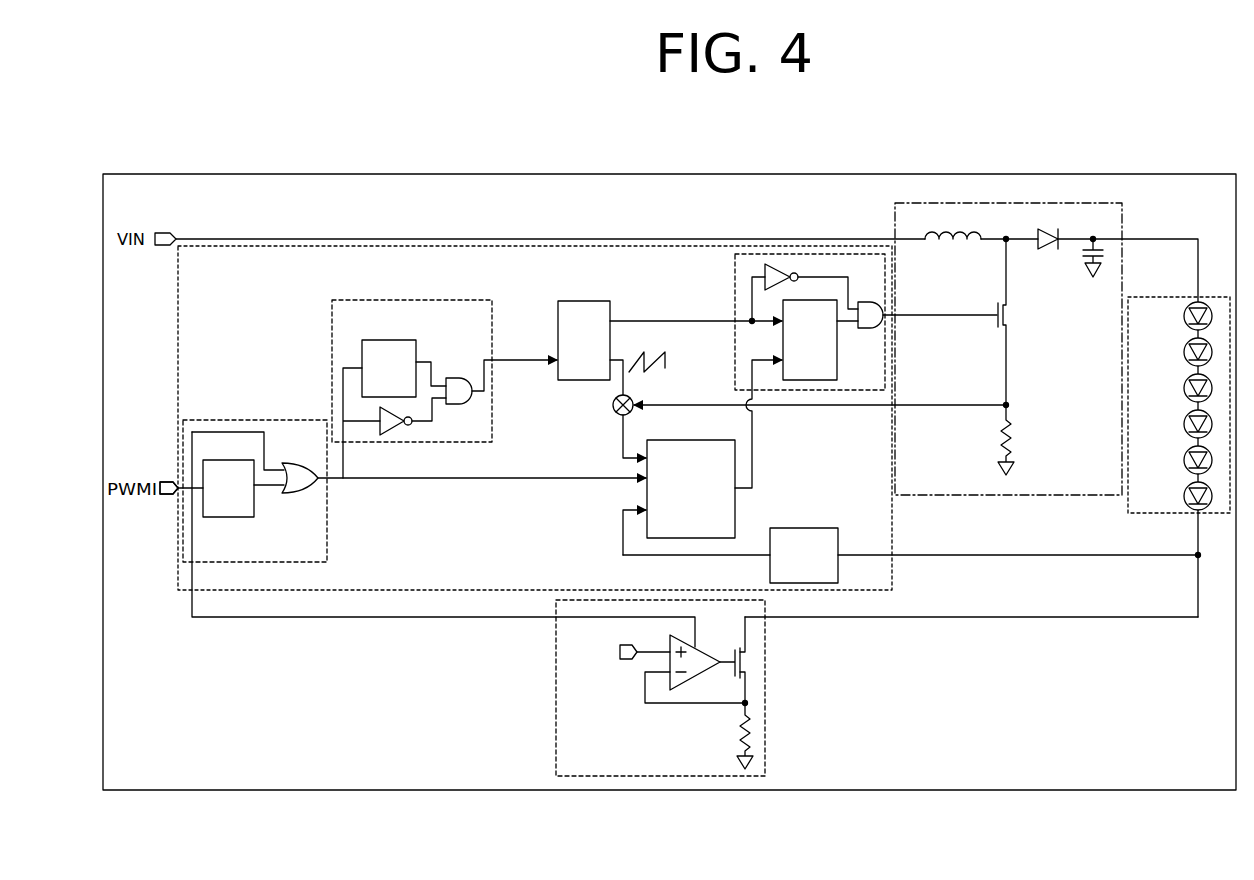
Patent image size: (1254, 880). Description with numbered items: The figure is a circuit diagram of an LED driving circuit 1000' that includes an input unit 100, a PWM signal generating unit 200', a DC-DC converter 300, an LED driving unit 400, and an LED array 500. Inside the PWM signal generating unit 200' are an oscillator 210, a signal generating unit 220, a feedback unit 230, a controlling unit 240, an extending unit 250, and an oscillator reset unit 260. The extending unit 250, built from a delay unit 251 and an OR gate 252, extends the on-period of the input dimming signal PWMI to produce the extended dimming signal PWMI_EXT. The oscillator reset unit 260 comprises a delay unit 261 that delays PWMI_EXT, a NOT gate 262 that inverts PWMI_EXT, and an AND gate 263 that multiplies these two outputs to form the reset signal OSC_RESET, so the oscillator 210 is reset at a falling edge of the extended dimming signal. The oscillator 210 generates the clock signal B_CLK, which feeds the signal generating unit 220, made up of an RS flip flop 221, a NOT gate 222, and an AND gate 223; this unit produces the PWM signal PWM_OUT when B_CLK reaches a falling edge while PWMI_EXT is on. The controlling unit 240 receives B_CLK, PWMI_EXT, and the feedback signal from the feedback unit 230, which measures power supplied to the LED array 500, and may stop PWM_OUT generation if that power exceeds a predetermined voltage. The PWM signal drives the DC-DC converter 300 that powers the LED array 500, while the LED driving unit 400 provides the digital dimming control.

The LED driving circuit 1000' is at (669, 455).
The input unit 100 is at (164, 482).
The PWM signal generating unit 200' is at (661, 397).
The oscillator 210 is at (585, 381).
The signal generating unit 220 is at (735, 278).
The RS flip flop 221 is at (783, 340).
The NOT gate 222 is at (777, 264).
The AND gate 223 is at (868, 330).
The feedback unit 230 is at (815, 528).
The controlling unit 240 is at (736, 450).
The extending unit 250 is at (282, 479).
The delay unit 251 is at (240, 517).
The OR gate 252 is at (300, 494).
The oscillator reset unit 260 is at (416, 361).
The delay unit 261 is at (398, 340).
The NOT gate 262 is at (412, 425).
The AND gate 263 is at (455, 378).
The DC-DC converter 300 is at (912, 203).
The LED driving unit 400 is at (765, 686).
The LED array 500 is at (1208, 297).